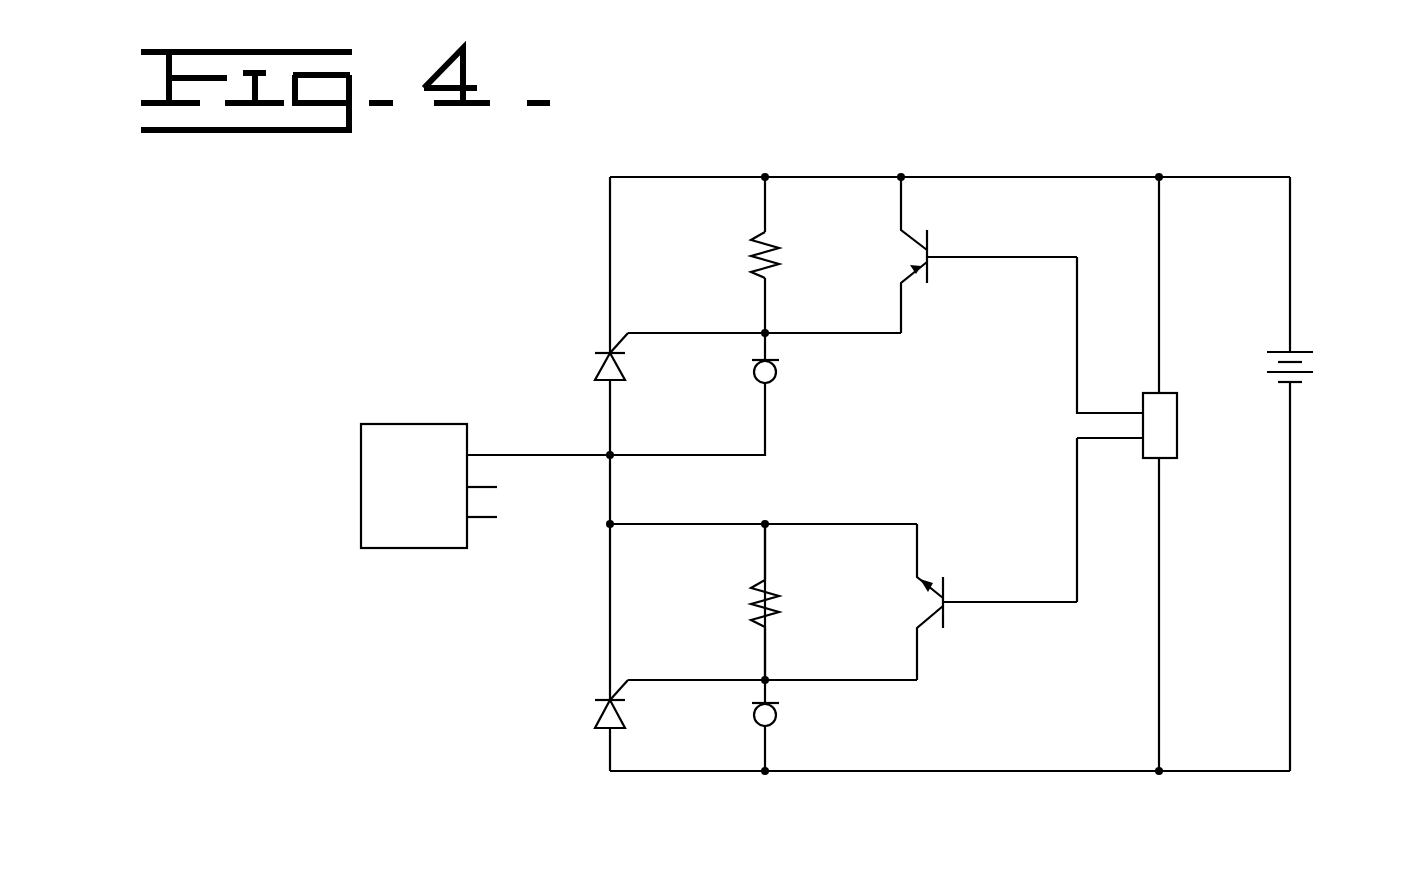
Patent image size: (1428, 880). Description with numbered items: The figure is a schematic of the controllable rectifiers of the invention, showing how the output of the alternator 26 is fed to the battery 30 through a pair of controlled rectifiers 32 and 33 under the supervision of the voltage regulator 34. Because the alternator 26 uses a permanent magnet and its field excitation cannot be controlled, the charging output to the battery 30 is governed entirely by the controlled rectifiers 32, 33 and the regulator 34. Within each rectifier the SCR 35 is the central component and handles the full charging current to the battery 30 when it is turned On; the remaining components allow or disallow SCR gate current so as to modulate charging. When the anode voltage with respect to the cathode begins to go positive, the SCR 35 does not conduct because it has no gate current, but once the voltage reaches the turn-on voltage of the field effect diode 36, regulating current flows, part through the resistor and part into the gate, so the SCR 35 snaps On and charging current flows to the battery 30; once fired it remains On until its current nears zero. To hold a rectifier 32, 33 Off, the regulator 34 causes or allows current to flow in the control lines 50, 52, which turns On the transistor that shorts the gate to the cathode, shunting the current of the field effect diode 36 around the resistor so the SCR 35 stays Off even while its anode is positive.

The alternator 26 is at (361, 487).
The battery 30 is at (1340, 346).
The controlled rectifier 32 is at (566, 325).
The controlled rectifier 33 is at (565, 737).
The voltage regulator 34 is at (1177, 423).
The SCR 35 is at (623, 368).
The field effect diode 36 is at (777, 371).
The control line 50 is at (1077, 345).
The control line 52 is at (1000, 602).